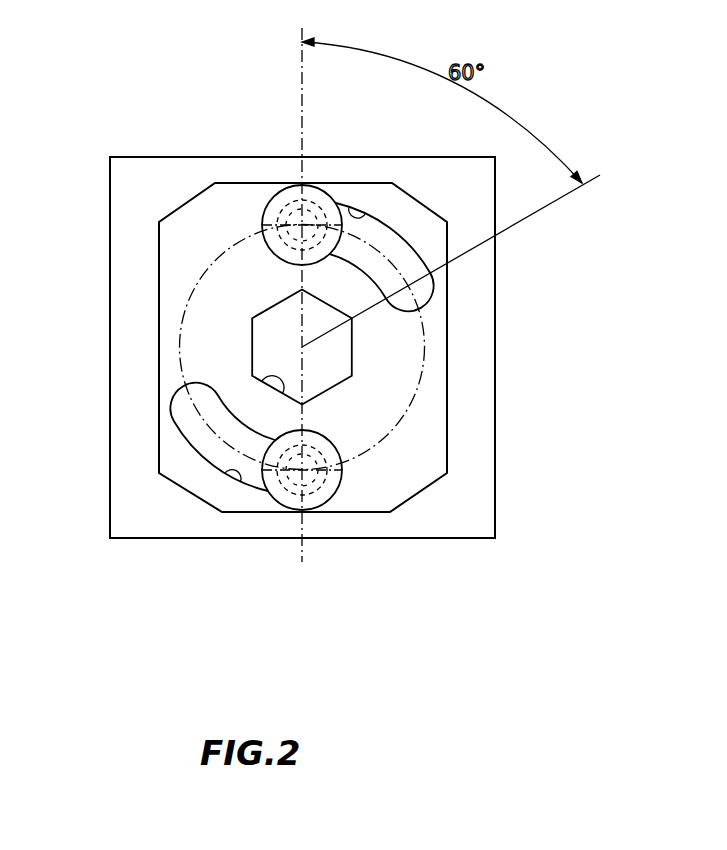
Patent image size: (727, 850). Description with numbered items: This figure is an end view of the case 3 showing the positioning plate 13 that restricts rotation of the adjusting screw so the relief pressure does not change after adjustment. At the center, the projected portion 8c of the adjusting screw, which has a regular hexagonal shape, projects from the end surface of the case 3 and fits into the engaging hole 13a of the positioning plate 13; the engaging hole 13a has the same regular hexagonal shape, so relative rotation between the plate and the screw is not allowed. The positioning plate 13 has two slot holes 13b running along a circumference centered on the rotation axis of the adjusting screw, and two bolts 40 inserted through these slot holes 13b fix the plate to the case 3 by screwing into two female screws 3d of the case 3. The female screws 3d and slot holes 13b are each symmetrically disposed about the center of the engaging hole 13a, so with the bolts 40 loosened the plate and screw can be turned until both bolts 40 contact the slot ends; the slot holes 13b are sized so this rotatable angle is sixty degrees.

The case 3 is at (495, 437).
The positioning plate 13 is at (420, 493).
The projected portion 8c is at (270, 345).
The engaging hole 13a is at (257, 382).
The slot hole 13b is at (350, 207).
The bolt 40 is at (270, 200).
The female screw 3d is at (283, 188).